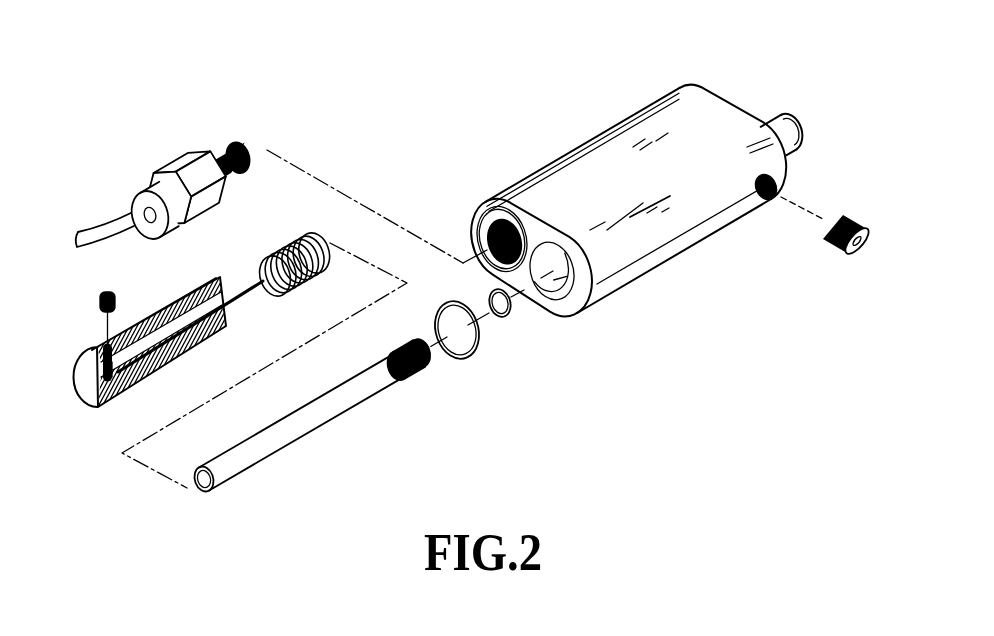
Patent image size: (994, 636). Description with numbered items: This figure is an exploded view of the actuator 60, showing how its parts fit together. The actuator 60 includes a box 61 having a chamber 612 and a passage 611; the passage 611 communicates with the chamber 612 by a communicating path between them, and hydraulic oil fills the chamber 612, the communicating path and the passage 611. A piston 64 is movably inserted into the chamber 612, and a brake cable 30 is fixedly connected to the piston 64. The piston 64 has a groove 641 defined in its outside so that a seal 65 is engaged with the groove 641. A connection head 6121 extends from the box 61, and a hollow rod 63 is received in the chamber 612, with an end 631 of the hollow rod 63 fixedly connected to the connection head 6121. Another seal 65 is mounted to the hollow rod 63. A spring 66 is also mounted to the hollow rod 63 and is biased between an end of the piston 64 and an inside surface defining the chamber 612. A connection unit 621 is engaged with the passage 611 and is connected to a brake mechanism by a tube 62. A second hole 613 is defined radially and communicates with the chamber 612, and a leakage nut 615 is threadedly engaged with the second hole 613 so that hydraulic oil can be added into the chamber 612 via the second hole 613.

The actuator 60 is at (511, 108).
The box 61 is at (627, 143).
The passage 611 is at (480, 235).
The chamber 612 is at (597, 305).
The connection head 6121 is at (763, 120).
The second hole 613 is at (768, 202).
The leakage nut 615 is at (855, 220).
The tube 62 is at (97, 236).
The connection unit 621 is at (173, 187).
The hollow rod 63 is at (318, 413).
The end of the hollow rod 631 is at (413, 370).
The piston 64 is at (82, 377).
The groove 641 is at (200, 284).
The seal 65 is at (475, 355).
The spring 66 is at (286, 240).
The brake cable 30 is at (242, 302).